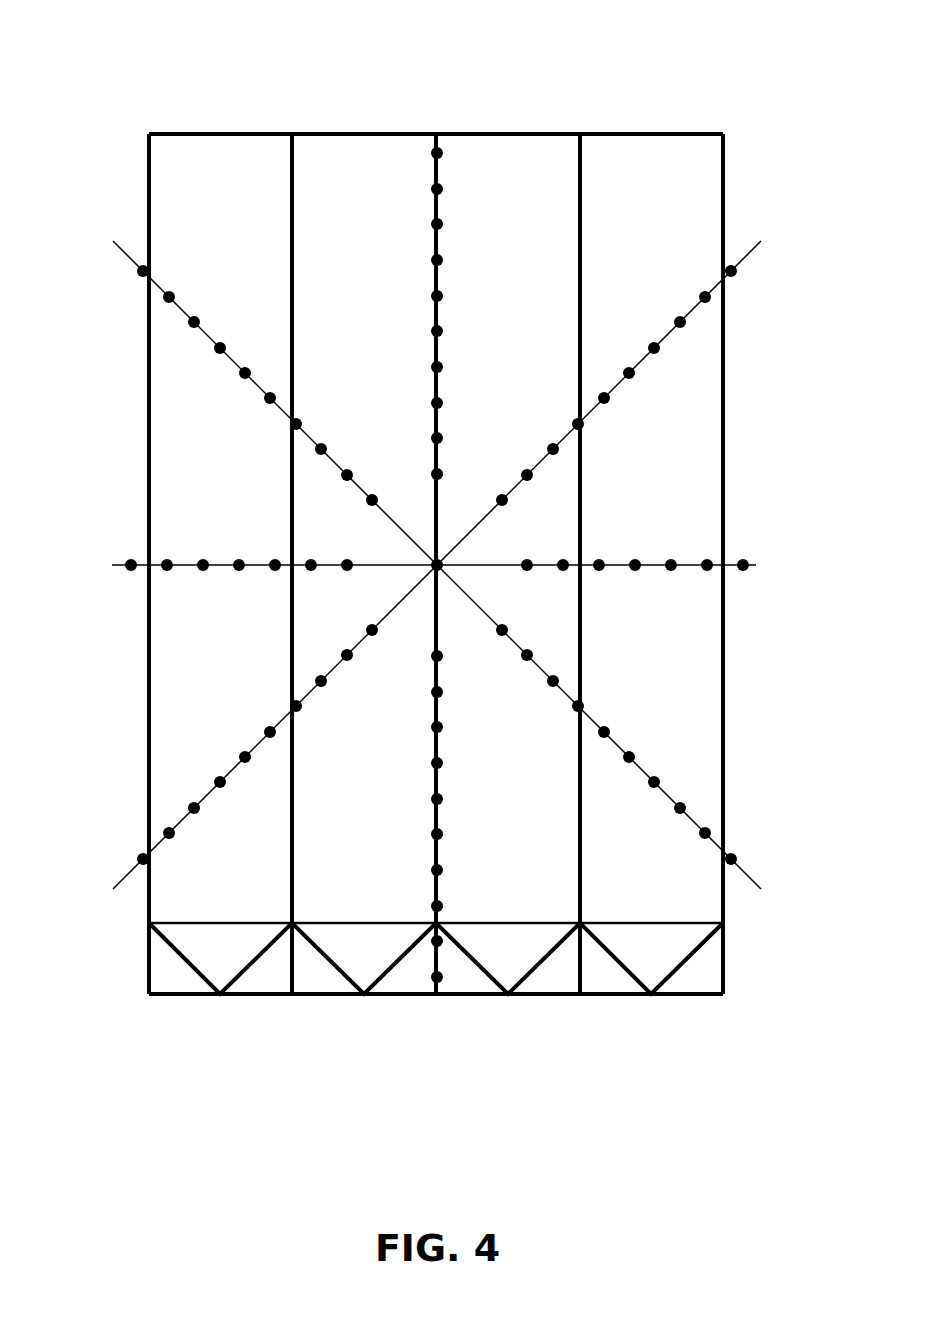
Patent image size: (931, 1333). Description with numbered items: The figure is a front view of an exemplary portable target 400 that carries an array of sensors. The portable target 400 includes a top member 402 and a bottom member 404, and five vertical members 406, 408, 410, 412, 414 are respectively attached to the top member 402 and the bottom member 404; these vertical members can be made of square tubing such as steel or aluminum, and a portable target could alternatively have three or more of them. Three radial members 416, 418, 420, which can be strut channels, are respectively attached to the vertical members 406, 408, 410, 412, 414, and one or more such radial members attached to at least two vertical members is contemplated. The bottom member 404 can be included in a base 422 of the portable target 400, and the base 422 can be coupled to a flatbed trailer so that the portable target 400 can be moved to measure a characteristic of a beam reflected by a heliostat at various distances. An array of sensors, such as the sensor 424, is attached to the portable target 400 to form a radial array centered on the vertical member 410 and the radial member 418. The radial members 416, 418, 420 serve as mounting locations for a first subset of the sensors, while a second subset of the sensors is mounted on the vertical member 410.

The portable target 400 is at (726, 60).
The top member 402 is at (217, 133).
The bottom member 404 is at (326, 996).
The vertical member 406 is at (149, 205).
The vertical member 408 is at (292, 203).
The vertical member 410 is at (436, 213).
The vertical member 412 is at (578, 203).
The vertical member 414 is at (723, 203).
The radial member 416 is at (127, 262).
The radial member 418 is at (112, 563).
The radial member 420 is at (121, 872).
The base 422 is at (735, 956).
The sensor 424 is at (268, 722).